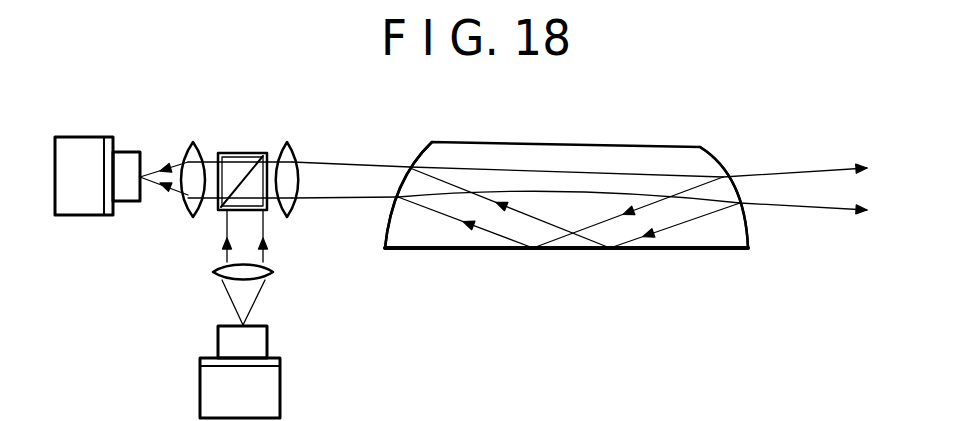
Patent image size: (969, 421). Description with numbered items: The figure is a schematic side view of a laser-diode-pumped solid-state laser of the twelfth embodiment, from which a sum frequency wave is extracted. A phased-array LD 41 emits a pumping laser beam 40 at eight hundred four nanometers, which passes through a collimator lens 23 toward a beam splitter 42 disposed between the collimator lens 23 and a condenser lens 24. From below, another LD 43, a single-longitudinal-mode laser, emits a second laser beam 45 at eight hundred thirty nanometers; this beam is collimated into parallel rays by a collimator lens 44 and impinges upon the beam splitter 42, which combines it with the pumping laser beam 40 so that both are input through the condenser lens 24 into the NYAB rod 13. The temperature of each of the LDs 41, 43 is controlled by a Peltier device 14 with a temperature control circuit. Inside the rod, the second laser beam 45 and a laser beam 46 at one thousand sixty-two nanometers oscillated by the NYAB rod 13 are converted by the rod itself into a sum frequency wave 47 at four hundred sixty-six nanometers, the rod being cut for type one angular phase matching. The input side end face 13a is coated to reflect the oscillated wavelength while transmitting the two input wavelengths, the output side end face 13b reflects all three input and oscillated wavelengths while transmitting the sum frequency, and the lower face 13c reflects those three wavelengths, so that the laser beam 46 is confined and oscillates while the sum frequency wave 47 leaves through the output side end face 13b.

The NYAB rod 13 is at (553, 140).
The input side end face 13a is at (409, 160).
The output side end face 13b is at (716, 153).
The lower face 13c is at (657, 252).
The Peltier device 14 is at (80, 148).
The collimator lens 23 is at (193, 142).
The condenser lens 24 is at (289, 148).
The pumping laser beam 40 is at (213, 153).
The phased-array LD 41 is at (140, 152).
The beam splitter 42 is at (229, 212).
The LD 43 is at (251, 342).
The collimator lens 44 is at (273, 275).
The second laser beam 45 is at (231, 297).
The laser beam 46 is at (490, 232).
The sum frequency wave 47 is at (813, 210).